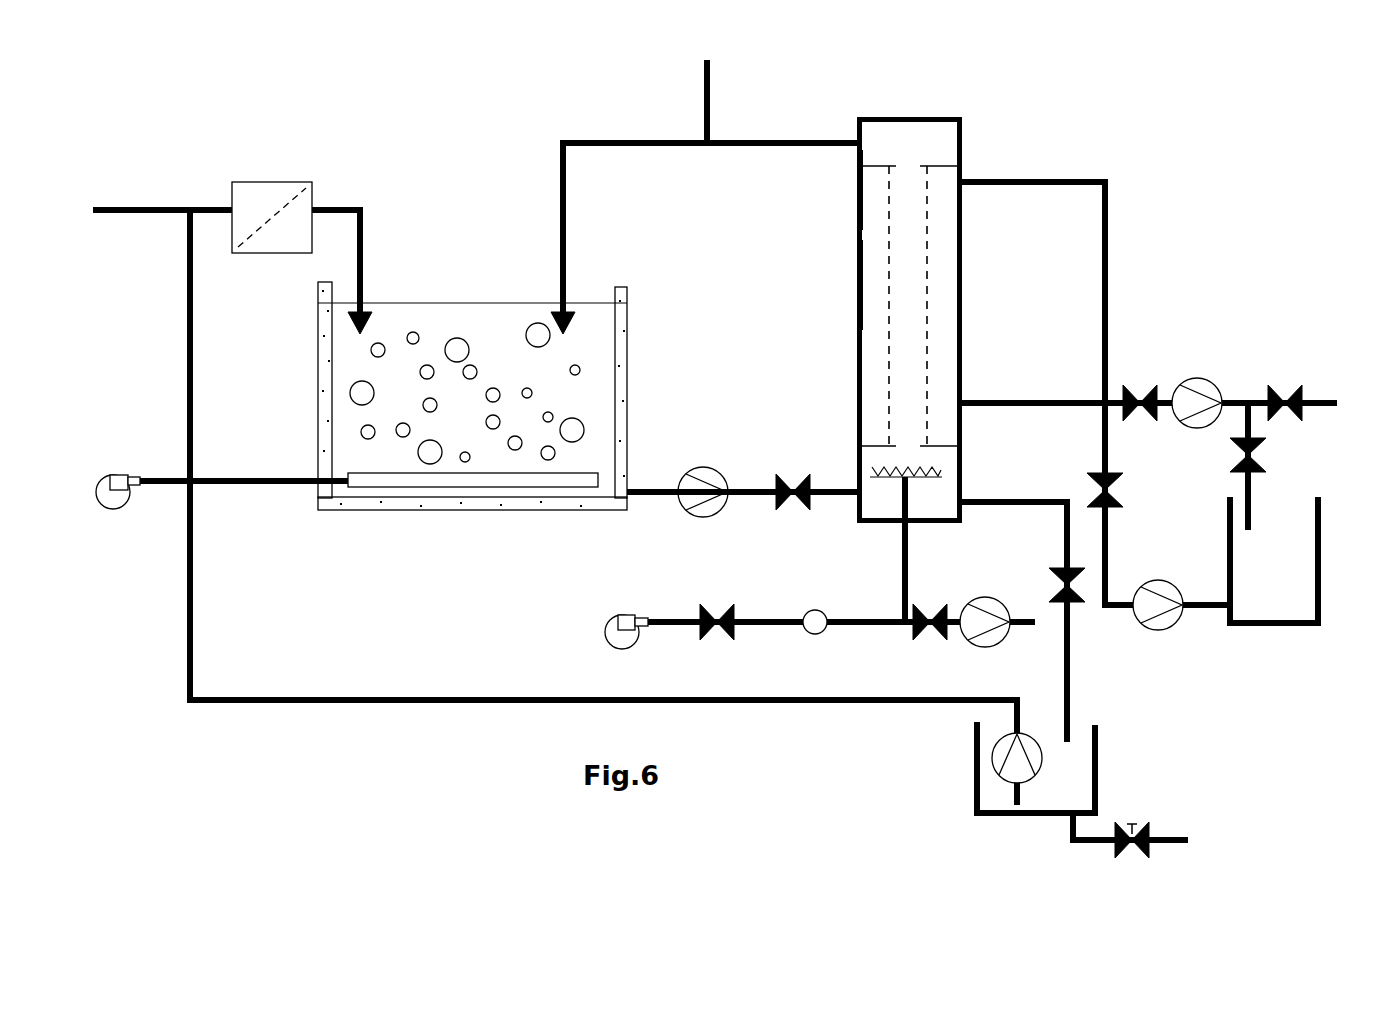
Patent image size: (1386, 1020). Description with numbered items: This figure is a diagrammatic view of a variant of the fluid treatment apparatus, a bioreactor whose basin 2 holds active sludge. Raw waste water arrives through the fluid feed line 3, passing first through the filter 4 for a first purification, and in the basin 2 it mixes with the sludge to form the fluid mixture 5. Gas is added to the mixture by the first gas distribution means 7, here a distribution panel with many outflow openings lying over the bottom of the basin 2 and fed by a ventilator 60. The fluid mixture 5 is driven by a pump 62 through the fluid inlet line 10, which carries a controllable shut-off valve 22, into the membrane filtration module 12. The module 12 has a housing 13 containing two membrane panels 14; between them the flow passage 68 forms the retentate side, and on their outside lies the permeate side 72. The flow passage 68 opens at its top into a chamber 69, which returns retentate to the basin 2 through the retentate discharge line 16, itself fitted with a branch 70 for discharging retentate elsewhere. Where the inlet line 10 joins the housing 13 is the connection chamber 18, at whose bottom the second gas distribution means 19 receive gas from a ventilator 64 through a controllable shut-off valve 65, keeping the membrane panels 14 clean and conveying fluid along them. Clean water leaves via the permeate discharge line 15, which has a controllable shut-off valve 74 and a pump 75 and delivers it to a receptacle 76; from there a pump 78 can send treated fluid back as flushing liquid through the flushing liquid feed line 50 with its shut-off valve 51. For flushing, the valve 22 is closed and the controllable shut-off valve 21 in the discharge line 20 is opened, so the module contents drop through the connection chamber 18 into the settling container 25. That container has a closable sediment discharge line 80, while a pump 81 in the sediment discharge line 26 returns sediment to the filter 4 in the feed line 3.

The basin 2 is at (318, 443).
The fluid feed line 3 is at (130, 208).
The filter 4 is at (272, 182).
The fluid mixture 5 is at (345, 367).
The first gas distribution means 7 is at (375, 488).
The fluid inlet line 10 is at (742, 490).
The membrane filtration module 12 is at (930, 98).
The housing 13 is at (857, 197).
The membrane panels 14 is at (887, 258).
The permeate discharge line 15 is at (1000, 400).
The retentate discharge line 16 is at (568, 278).
The connection chamber 18 is at (862, 466).
The second gas distribution means 19 is at (943, 476).
The discharge line 20 is at (1065, 693).
The controllable shut-off valve 21 is at (1060, 577).
The controllable shut-off valve 22 is at (785, 474).
The settling container 25 is at (1097, 785).
The sediment discharge line 26 is at (188, 290).
The flushing liquid feed line 50 is at (1030, 180).
The shut-off valve 51 is at (1108, 495).
The ventilator 60 is at (103, 476).
The pump 62 is at (680, 475).
The ventilator 64 is at (603, 635).
The controllable shut-off valve 65 is at (722, 605).
The flow passage 68 is at (928, 294).
The chamber 69 is at (962, 152).
The branch 70 is at (705, 104).
The permeate side 72 is at (875, 305).
The controllable shut-off valve 74 is at (1137, 388).
The pump 75 is at (1205, 380).
The receptacle 76 is at (1260, 625).
The pump 78 is at (1150, 628).
The closable sediment discharge line 80 is at (1158, 836).
The pump 81 is at (990, 764).